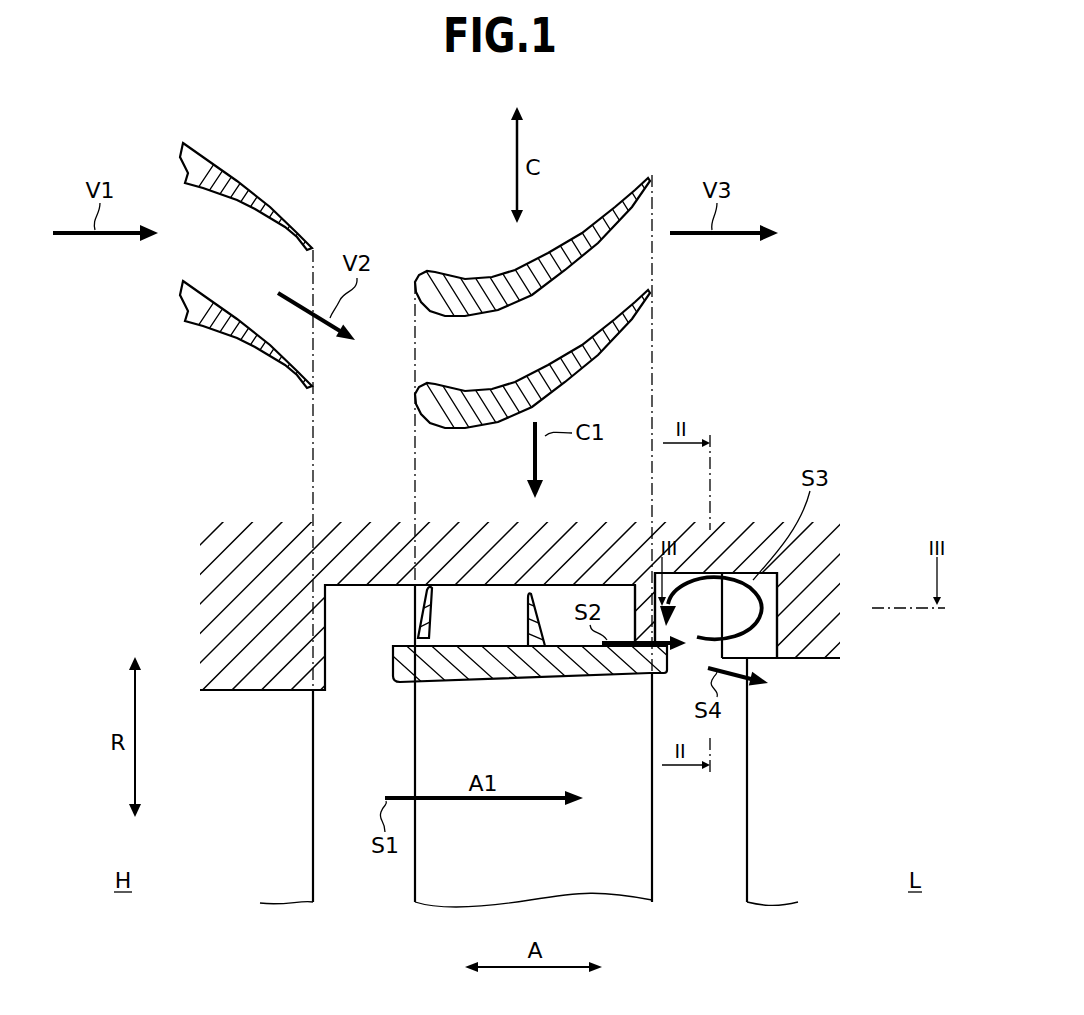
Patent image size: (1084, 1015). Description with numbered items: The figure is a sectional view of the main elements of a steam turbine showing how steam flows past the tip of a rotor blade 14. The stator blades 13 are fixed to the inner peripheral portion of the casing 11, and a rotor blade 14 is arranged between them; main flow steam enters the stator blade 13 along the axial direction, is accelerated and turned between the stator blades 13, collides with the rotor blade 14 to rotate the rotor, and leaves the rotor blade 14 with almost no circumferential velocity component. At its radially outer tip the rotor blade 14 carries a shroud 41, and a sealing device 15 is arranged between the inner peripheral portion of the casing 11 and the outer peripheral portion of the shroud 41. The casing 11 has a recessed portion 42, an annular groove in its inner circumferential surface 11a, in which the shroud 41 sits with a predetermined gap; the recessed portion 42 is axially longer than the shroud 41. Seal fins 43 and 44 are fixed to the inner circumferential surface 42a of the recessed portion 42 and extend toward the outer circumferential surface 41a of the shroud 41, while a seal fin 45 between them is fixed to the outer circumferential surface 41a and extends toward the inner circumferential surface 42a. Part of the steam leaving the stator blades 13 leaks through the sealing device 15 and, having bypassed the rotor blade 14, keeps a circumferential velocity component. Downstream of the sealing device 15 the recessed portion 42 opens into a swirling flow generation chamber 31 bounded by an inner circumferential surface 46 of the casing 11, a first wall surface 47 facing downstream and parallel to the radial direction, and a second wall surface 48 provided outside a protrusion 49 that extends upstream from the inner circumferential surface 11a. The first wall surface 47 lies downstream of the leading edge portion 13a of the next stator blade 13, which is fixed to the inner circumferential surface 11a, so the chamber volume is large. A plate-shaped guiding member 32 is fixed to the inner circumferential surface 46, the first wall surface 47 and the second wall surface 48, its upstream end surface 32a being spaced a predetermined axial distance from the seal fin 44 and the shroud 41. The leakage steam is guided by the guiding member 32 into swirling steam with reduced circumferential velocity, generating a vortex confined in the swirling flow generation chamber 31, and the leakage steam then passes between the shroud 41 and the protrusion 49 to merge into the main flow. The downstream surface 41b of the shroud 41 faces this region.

The casing 11 is at (818, 562).
The inner circumferential surface 11a is at (810, 661).
The stator blade 13 is at (234, 174).
The leading edge portion 13a is at (747, 806).
The rotor blade 14 is at (583, 222).
The sealing device 15 is at (380, 623).
The swirling flow generation chamber 31 is at (713, 615).
The guiding member 32 is at (782, 592).
The end surface 32a is at (724, 578).
The shroud 41 is at (402, 680).
The outer circumferential surface 41a is at (467, 645).
The shroud downstream surface 41b is at (669, 670).
The recessed portion 42 is at (387, 594).
The inner circumferential surface 42a is at (497, 594).
The seal fin 43 is at (420, 628).
The seal fin 44 is at (642, 617).
The seal fin 45 is at (540, 595).
The inner circumferential surface 46 is at (700, 603).
The first wall surface 47 is at (768, 620).
The second wall surface 48 is at (767, 661).
The protrusion 49 is at (706, 648).